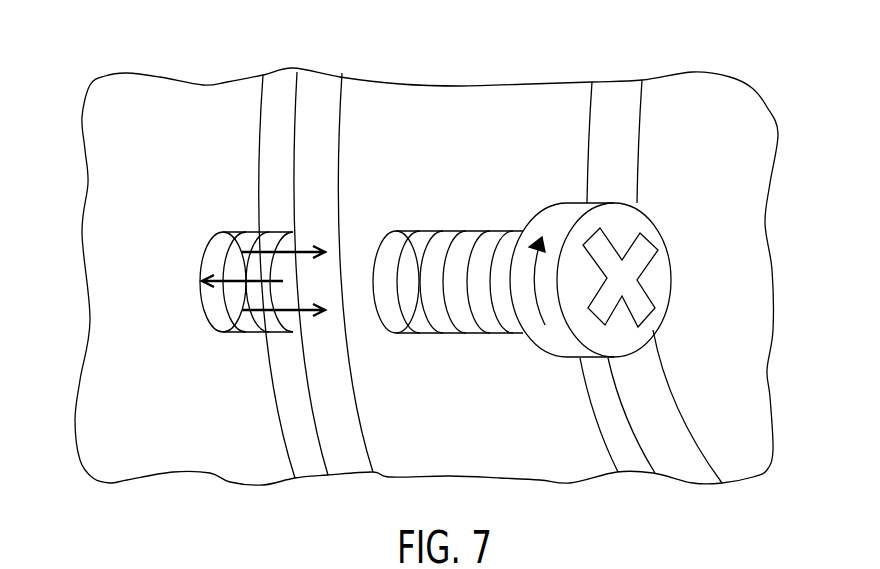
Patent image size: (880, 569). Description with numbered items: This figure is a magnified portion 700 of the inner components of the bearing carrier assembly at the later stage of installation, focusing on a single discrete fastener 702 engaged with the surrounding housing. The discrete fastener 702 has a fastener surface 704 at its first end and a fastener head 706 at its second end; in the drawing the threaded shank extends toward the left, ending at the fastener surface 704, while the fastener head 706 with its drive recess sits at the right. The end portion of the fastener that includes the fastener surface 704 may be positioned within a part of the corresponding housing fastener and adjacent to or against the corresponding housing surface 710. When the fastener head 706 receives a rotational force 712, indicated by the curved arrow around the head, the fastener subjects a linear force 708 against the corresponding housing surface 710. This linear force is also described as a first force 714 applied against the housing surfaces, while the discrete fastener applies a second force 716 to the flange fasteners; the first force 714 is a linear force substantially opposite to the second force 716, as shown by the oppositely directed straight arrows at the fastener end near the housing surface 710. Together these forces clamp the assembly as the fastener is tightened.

The magnified portion 700 is at (148, 52).
The discrete fastener 702 is at (540, 208).
The fastener surface 704 is at (207, 257).
The fastener head 706 is at (628, 270).
The linear force 708 is at (200, 310).
The housing surface 710 is at (205, 307).
The rotational force 712 is at (533, 288).
The first force 714 is at (281, 282).
The second force 716 is at (272, 232).